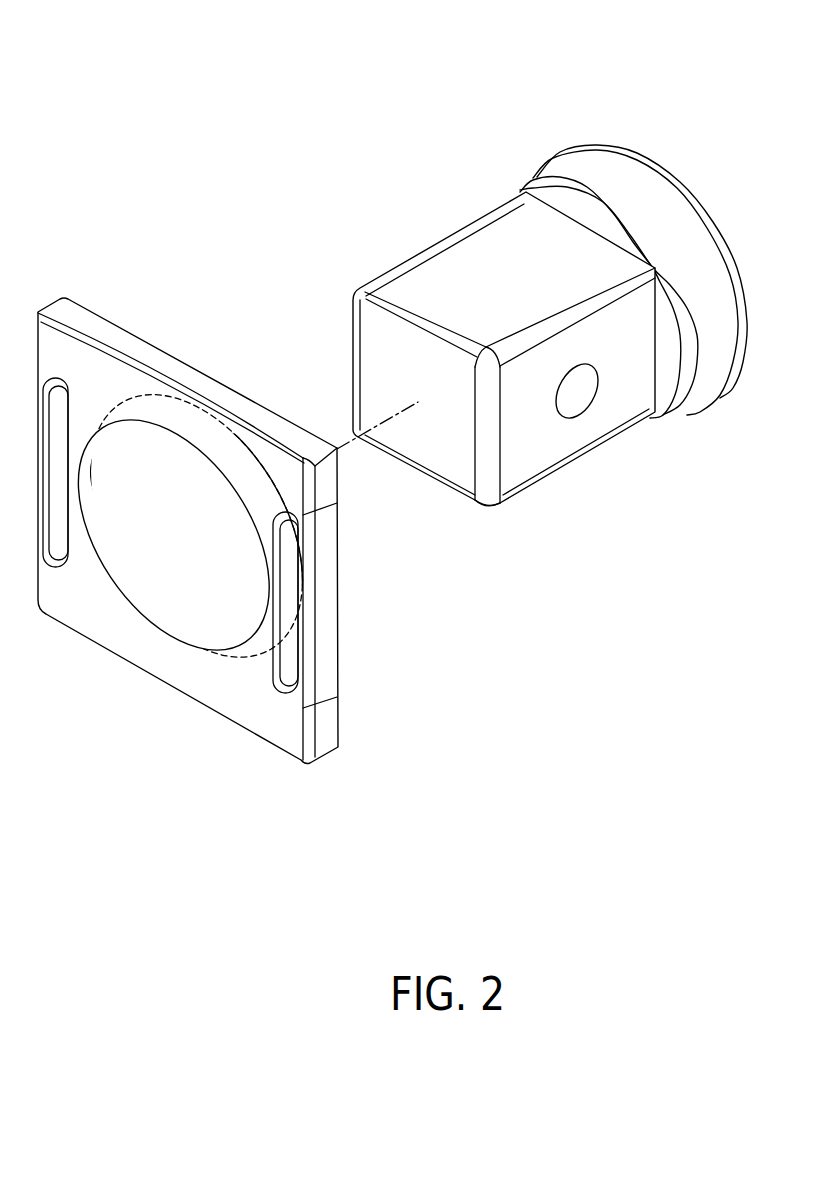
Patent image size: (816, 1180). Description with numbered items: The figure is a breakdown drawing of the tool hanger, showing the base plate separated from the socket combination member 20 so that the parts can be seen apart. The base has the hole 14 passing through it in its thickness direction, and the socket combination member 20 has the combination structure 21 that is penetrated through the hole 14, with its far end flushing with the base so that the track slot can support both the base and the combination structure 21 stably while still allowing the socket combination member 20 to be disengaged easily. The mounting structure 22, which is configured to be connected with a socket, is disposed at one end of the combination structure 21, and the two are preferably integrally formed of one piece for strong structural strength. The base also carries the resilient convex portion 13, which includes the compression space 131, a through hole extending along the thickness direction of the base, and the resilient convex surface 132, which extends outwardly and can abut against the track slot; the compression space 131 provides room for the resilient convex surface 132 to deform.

The resilient convex portion 13 is at (283, 512).
The compression space 131 is at (293, 652).
The resilient convex surface 132 is at (327, 608).
The hole 14 is at (87, 498).
The socket combination member 20 is at (637, 72).
The combination structure 21 is at (610, 168).
The mounting structure 22 is at (476, 243).